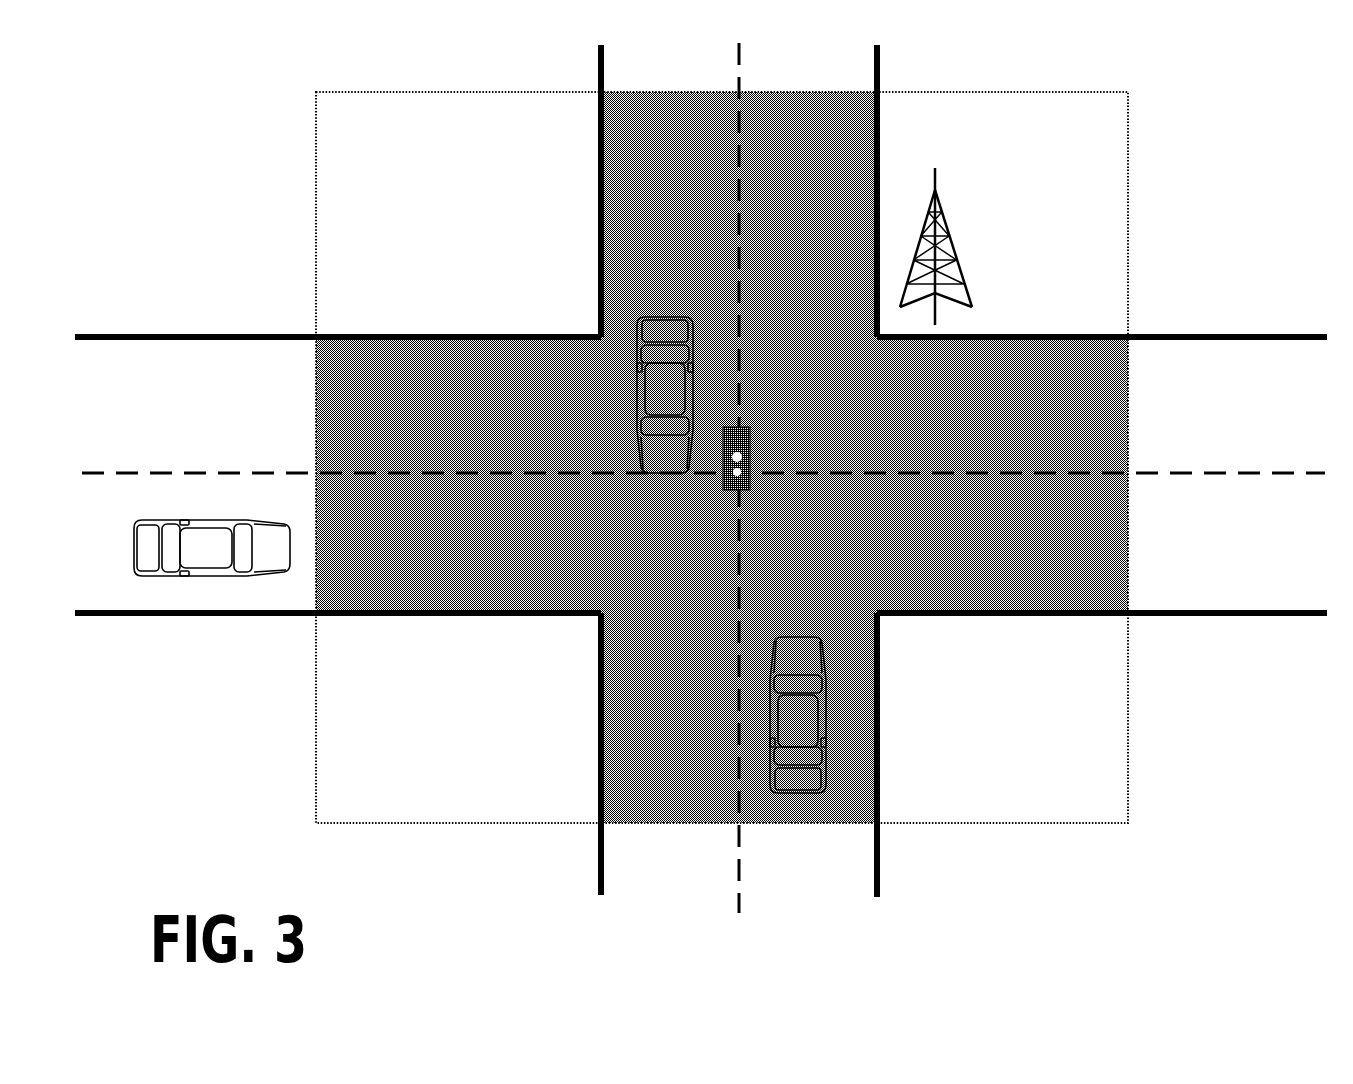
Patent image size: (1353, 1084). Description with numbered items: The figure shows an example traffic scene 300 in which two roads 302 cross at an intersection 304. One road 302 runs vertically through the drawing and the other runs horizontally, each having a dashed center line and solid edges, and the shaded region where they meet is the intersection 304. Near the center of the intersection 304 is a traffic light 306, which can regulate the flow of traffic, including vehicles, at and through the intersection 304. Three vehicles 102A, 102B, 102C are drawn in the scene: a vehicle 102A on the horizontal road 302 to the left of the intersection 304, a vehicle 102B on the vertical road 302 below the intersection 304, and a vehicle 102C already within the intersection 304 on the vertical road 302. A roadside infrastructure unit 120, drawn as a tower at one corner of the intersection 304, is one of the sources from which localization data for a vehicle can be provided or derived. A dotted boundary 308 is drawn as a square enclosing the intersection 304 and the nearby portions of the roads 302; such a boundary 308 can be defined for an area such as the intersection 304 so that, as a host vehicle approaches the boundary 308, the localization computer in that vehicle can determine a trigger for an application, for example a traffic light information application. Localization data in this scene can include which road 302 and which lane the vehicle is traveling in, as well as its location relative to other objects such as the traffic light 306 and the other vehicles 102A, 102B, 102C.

The traffic scene 300 is at (213, 128).
The road 302 is at (645, 865).
The intersection 304 is at (662, 531).
The traffic light 306 is at (752, 453).
The boundary 308 is at (763, 457).
The roadside infrastructure unit (RSU) 120 is at (957, 258).
The vehicle 102A is at (181, 557).
The vehicle 102B is at (798, 715).
The vehicle 102C is at (665, 395).